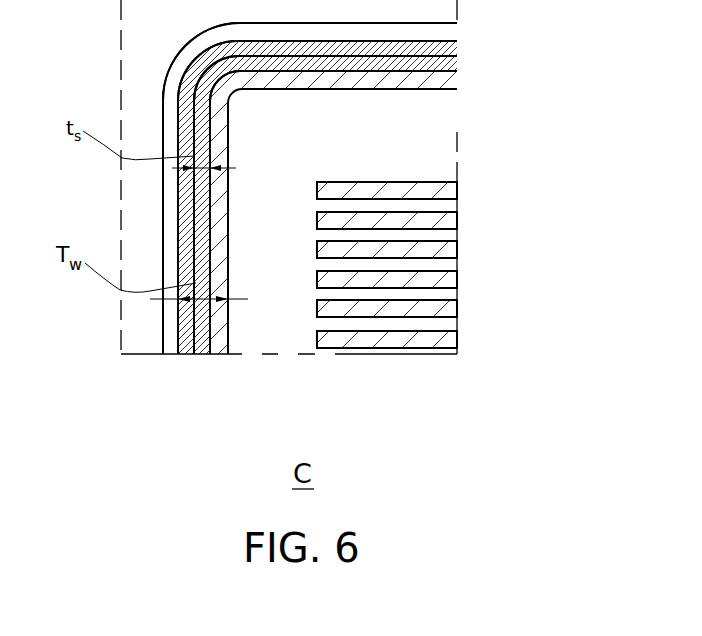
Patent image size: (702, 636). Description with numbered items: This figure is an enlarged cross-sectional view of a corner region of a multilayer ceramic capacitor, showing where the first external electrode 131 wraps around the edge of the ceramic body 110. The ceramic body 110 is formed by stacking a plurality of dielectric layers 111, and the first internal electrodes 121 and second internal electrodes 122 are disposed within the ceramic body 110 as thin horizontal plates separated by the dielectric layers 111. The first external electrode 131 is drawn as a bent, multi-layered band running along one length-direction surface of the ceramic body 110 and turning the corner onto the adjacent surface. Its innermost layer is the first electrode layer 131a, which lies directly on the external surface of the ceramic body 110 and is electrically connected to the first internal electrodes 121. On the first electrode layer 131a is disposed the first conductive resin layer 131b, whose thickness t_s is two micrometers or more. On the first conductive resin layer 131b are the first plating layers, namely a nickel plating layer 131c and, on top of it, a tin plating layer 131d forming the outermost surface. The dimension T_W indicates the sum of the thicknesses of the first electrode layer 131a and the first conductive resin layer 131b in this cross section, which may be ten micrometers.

The ceramic body 110 is at (449, 106).
The dielectric layer 111 is at (447, 234).
The first internal electrode 121 is at (456, 186).
The second internal electrode 122 is at (456, 215).
The first external electrode 131 is at (252, 244).
The first electrode layer 131a is at (333, 244).
The first conductive resin layer 131b is at (203, 340).
The nickel plating layer 131c is at (184, 327).
The tin plating layer 131d is at (166, 306).